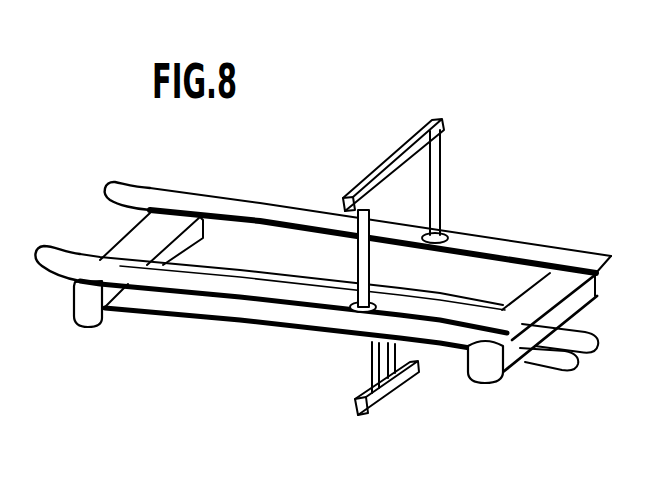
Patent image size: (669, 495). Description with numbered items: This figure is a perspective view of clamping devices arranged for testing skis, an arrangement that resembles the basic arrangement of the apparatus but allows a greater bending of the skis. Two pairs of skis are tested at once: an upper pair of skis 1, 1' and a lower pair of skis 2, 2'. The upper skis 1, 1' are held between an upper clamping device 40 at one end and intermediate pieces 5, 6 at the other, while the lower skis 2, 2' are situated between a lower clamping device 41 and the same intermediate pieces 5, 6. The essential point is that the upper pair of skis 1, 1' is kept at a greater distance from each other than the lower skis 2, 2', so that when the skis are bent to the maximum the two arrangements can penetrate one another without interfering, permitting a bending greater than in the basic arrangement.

The ski 1 is at (358, 227).
The ski 1' is at (271, 323).
The ski 2 is at (583, 341).
The ski 2' is at (569, 380).
The intermediate piece 5 is at (85, 308).
The intermediate piece 6 is at (487, 373).
The upper clamping device 40 is at (404, 108).
The lower clamping device 41 is at (397, 404).